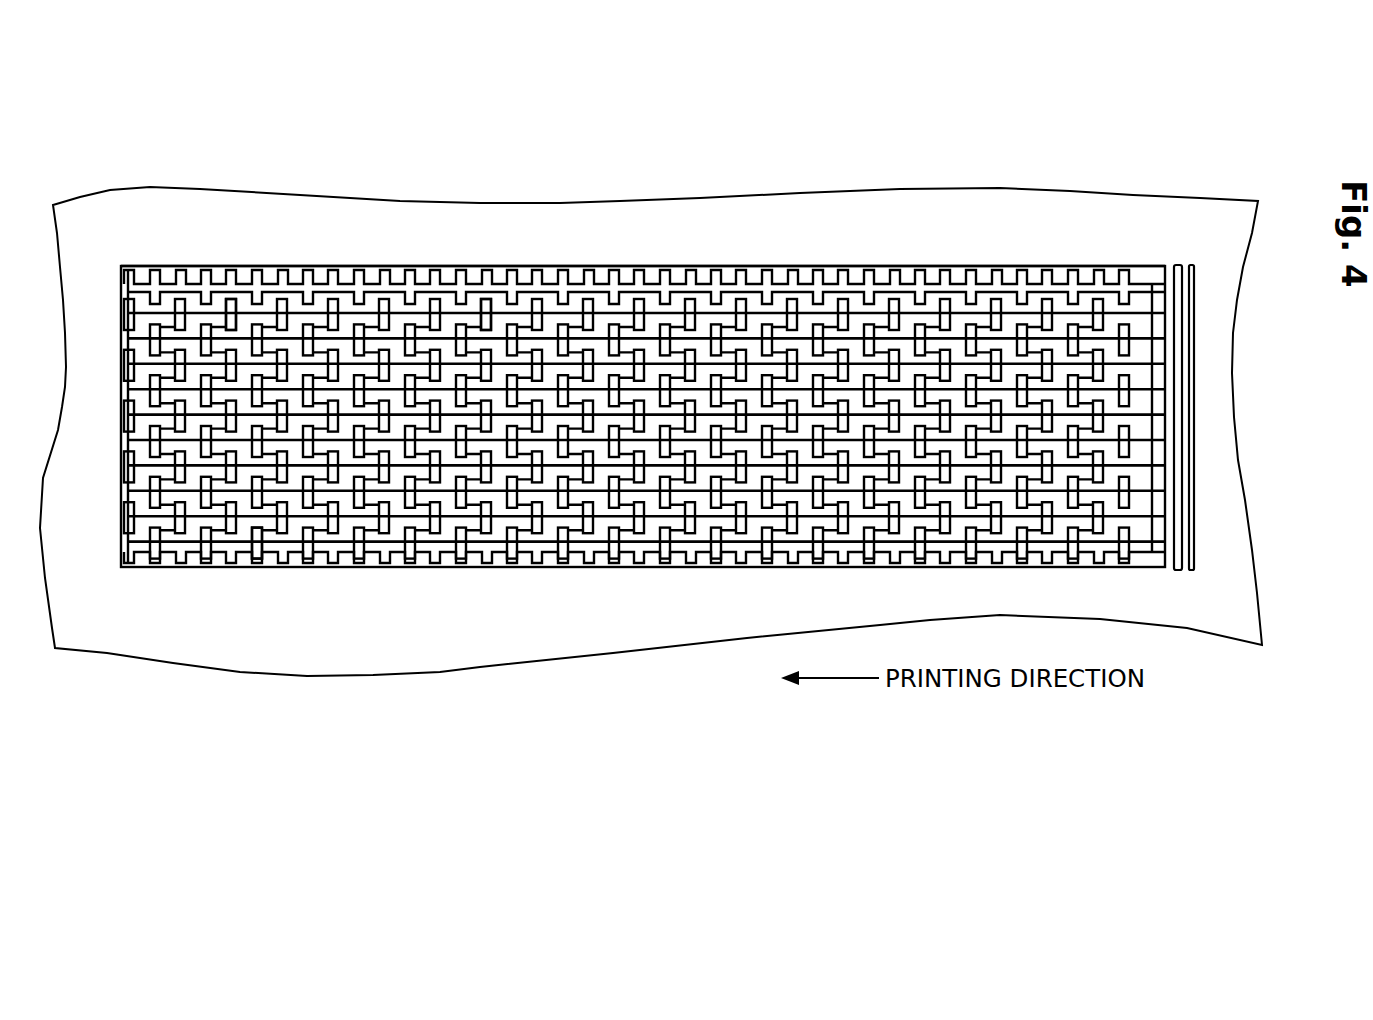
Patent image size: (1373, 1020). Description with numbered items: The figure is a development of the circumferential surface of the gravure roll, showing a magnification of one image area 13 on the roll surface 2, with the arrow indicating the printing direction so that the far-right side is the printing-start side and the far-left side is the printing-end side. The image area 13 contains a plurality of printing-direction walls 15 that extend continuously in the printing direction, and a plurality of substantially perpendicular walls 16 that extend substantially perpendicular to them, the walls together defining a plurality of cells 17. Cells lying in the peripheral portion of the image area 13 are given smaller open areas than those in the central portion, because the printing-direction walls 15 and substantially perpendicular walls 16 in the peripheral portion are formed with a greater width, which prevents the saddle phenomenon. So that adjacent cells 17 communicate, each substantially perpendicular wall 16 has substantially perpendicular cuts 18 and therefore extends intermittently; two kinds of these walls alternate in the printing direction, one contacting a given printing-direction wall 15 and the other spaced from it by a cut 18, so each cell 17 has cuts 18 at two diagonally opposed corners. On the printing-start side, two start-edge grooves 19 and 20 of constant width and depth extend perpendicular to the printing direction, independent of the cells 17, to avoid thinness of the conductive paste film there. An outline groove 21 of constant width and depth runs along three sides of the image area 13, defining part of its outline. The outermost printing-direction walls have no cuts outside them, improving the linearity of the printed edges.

The thermal head substrate 2 is at (121, 182).
The image area 13 is at (618, 258).
The printing-direction wall 15 is at (855, 285).
The substantially perpendicular wall 16 is at (328, 300).
The cell 17 is at (493, 325).
The substantially perpendicular cut 18 is at (222, 325).
The start-edge groove 19 is at (1200, 372).
The start-edge groove 20 is at (1200, 466).
The outline groove 21 is at (1068, 265).